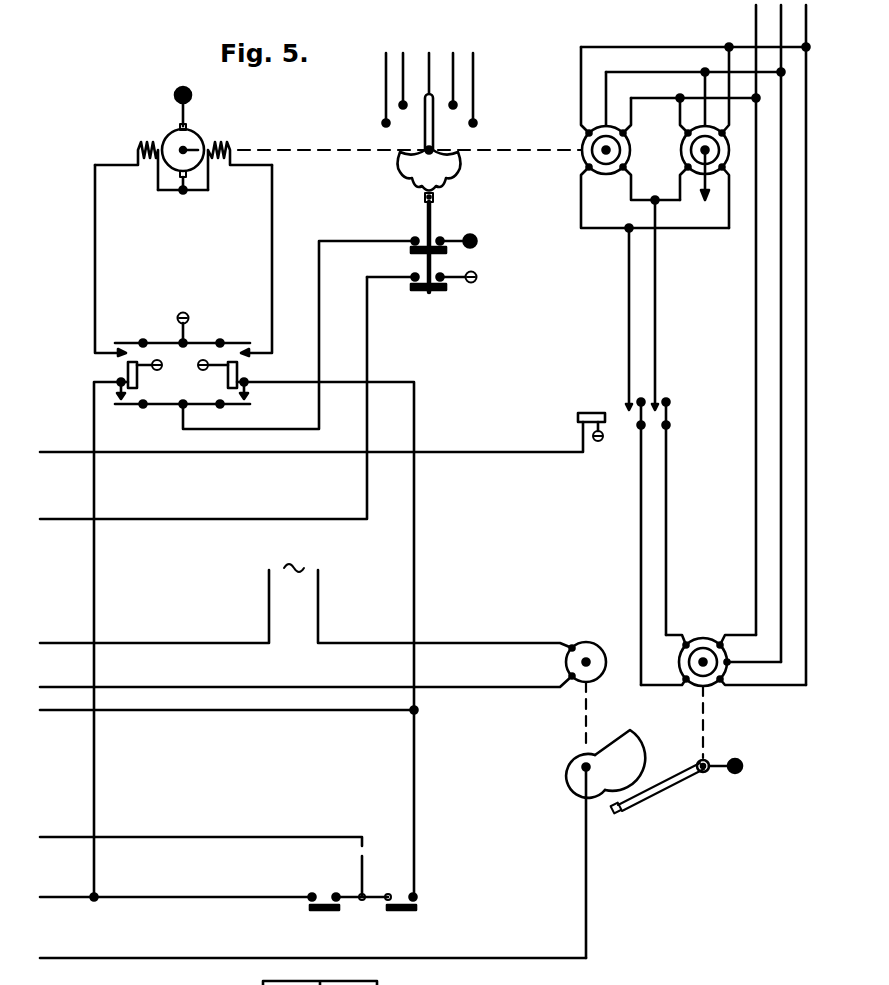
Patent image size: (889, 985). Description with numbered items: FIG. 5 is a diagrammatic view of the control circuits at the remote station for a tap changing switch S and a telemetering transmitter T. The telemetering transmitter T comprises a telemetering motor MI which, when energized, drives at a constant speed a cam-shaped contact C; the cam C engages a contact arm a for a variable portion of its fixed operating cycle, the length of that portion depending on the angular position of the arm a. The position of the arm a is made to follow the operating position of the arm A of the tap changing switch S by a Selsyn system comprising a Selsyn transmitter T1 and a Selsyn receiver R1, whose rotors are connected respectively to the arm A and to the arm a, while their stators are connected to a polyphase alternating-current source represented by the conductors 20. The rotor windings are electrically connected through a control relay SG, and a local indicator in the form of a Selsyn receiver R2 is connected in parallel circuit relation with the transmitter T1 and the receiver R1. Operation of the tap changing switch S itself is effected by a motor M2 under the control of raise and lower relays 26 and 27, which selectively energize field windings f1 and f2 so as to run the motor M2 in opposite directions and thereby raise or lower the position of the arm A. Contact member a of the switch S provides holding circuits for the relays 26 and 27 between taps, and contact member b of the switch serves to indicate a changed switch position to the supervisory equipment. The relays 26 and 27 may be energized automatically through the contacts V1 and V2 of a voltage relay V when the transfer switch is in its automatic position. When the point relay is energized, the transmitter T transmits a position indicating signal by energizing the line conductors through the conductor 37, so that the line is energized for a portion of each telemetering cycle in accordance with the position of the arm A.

The conductors 20 is at (775, 21).
The raise relay 26 is at (137, 378).
The lower relay 27 is at (228, 378).
The conductor 37 is at (492, 958).
The motor M2 is at (192, 137).
The field winding f1 is at (150, 165).
The field winding f2 is at (220, 165).
The tap changing switch S is at (495, 70).
The arm A is at (433, 131).
The contact arm a is at (437, 254).
The contact member b is at (437, 291).
The Selsyn transmitter T1 is at (582, 137).
The Selsyn receiver R2 is at (681, 150).
The control relay SG is at (594, 412).
The telemetering motor MI is at (588, 646).
The Selsyn receiver R1 is at (692, 641).
The telemetering transmitter T is at (564, 746).
The cam-shaped contact C is at (637, 750).
The voltage relay V is at (372, 833).
The contact V1 is at (335, 912).
The contact V2 is at (413, 912).